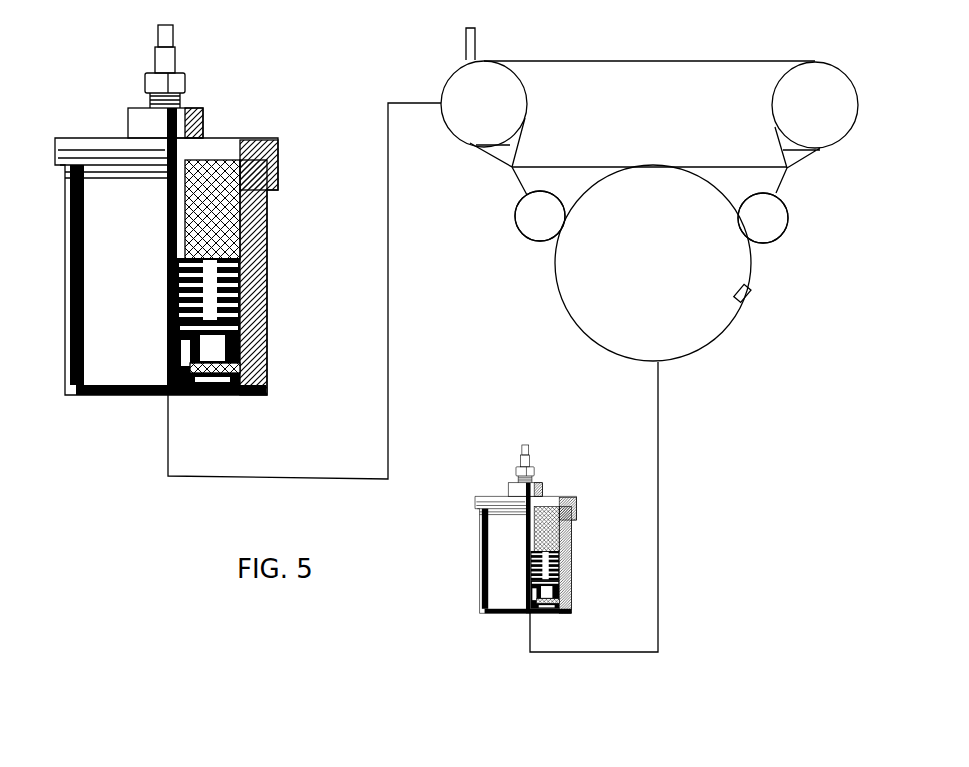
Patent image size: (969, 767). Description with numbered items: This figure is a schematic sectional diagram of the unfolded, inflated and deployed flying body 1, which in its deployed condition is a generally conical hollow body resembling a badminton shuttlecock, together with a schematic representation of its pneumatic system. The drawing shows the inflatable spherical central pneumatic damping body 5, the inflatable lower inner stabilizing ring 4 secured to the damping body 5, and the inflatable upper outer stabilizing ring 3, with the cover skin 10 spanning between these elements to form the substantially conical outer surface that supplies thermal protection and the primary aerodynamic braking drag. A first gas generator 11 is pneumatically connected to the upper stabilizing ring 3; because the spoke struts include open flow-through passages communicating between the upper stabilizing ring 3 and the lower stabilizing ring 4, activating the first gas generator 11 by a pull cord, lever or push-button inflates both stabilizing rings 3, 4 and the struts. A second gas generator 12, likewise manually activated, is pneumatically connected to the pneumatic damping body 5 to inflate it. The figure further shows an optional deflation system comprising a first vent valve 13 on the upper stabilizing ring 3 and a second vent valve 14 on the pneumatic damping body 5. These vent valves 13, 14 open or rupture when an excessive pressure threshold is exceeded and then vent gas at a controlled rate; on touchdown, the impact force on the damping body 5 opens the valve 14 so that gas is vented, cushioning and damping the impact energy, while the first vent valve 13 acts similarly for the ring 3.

The flying body 1 is at (522, 318).
The upper outer stabilizing ring 3 is at (463, 85).
The lower inner stabilizing ring 4 is at (775, 226).
The pneumatic damping body 5 is at (704, 324).
The cover skin 10 is at (518, 180).
The first gas generator 11 is at (132, 372).
The second gas generator 12 is at (508, 600).
The first vent valve 13 is at (490, 42).
The second vent valve 14 is at (750, 300).